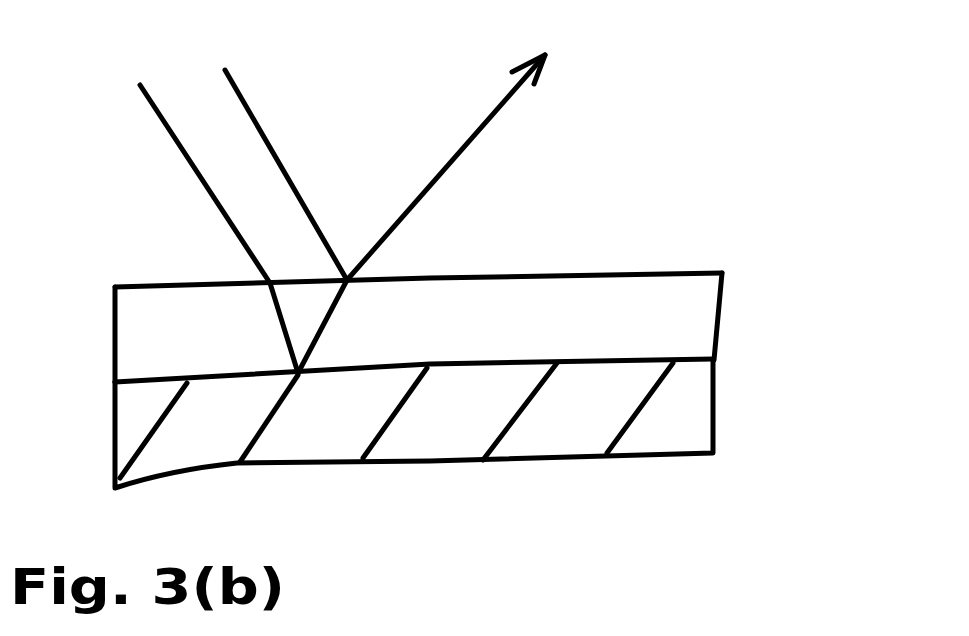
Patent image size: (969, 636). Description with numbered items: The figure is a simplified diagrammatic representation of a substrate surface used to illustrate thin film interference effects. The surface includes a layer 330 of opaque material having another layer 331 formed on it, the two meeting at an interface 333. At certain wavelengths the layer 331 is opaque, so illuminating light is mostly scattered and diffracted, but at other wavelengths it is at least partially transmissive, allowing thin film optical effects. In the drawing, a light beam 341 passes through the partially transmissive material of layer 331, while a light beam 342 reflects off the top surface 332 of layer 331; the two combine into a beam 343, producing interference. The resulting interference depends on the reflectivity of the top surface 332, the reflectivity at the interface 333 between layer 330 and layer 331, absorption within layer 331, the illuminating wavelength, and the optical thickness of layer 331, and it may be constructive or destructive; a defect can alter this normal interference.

The layer of opaque material 330 is at (686, 425).
The layer 331 is at (623, 307).
The top surface 332 is at (576, 258).
The interface 333 is at (688, 360).
The light beam 341 is at (163, 137).
The light beam 342 is at (285, 173).
The beam 343 is at (483, 122).